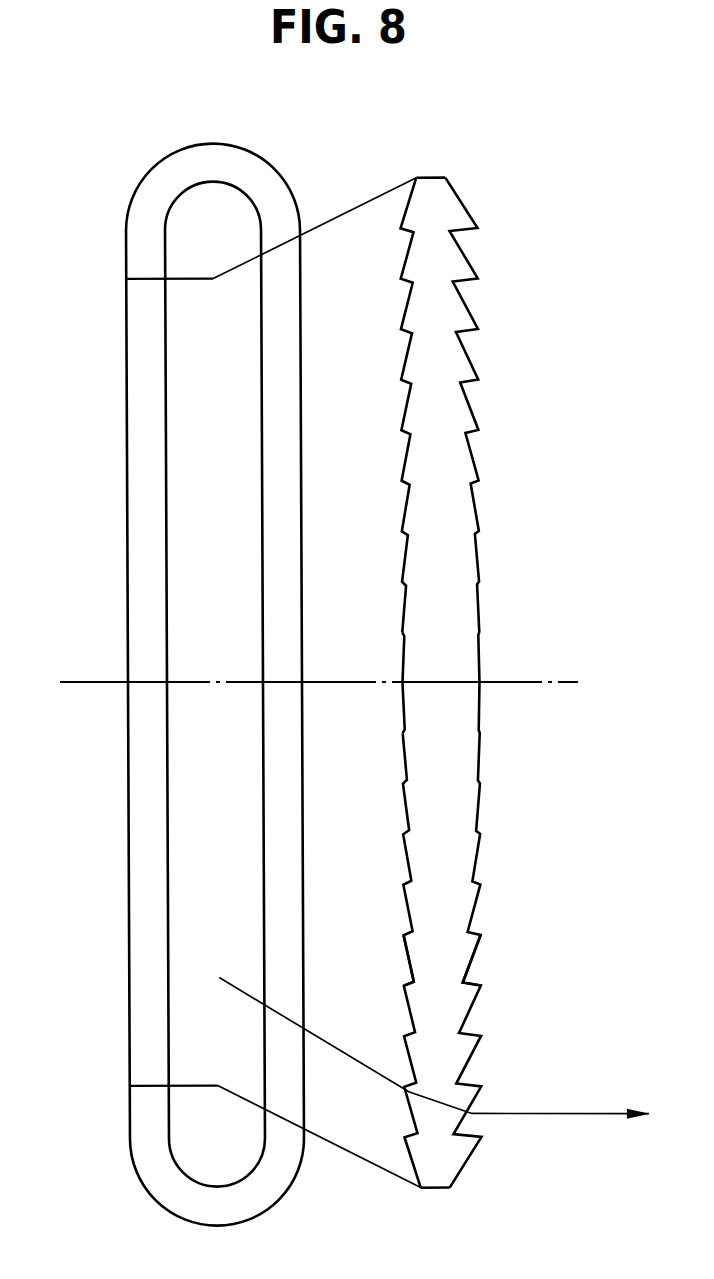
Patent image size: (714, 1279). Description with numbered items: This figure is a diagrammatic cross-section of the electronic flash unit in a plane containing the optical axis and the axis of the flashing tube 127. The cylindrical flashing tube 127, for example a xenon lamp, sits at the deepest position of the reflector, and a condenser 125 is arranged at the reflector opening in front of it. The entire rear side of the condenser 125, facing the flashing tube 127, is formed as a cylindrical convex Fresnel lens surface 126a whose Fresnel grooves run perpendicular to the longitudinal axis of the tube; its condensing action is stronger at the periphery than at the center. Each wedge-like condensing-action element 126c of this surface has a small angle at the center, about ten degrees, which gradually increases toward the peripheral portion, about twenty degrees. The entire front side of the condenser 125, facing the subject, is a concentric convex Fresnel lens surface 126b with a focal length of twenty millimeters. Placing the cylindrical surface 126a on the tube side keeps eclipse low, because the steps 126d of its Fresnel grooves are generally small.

The condenser 125 is at (449, 679).
The cylindrical convex Fresnel lens surface 126a is at (365, 683).
The concentric convex Fresnel lens surface 126b is at (481, 615).
The wedge-like condensing-action element 126c is at (405, 757).
The step 126d is at (410, 980).
The flashing tube 127 is at (137, 193).